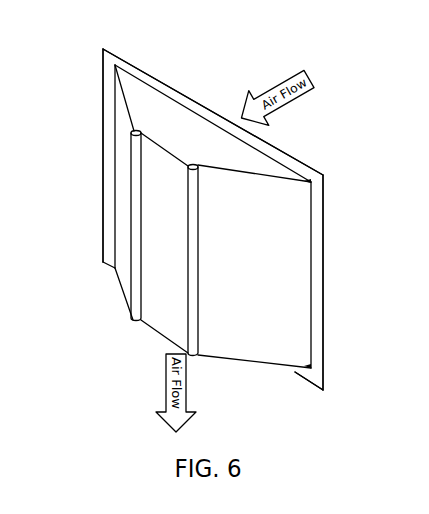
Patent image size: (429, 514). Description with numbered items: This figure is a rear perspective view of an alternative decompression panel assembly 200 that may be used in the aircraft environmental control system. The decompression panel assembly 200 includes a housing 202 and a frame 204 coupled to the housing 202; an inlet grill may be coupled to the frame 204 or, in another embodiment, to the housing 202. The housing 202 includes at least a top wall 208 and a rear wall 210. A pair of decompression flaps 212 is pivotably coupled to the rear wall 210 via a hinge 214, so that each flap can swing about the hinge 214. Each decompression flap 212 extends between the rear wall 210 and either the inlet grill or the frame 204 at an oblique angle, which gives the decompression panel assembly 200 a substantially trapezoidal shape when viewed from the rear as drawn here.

The air flow control assembly 200 is at (90, 22).
The top frame member 202 is at (168, 113).
The side frame member 204 is at (315, 203).
The second damper panel 208 is at (247, 157).
The first damper panel 210 is at (162, 307).
The frame member 212 is at (115, 113).
The pivot pin 214 is at (130, 202).